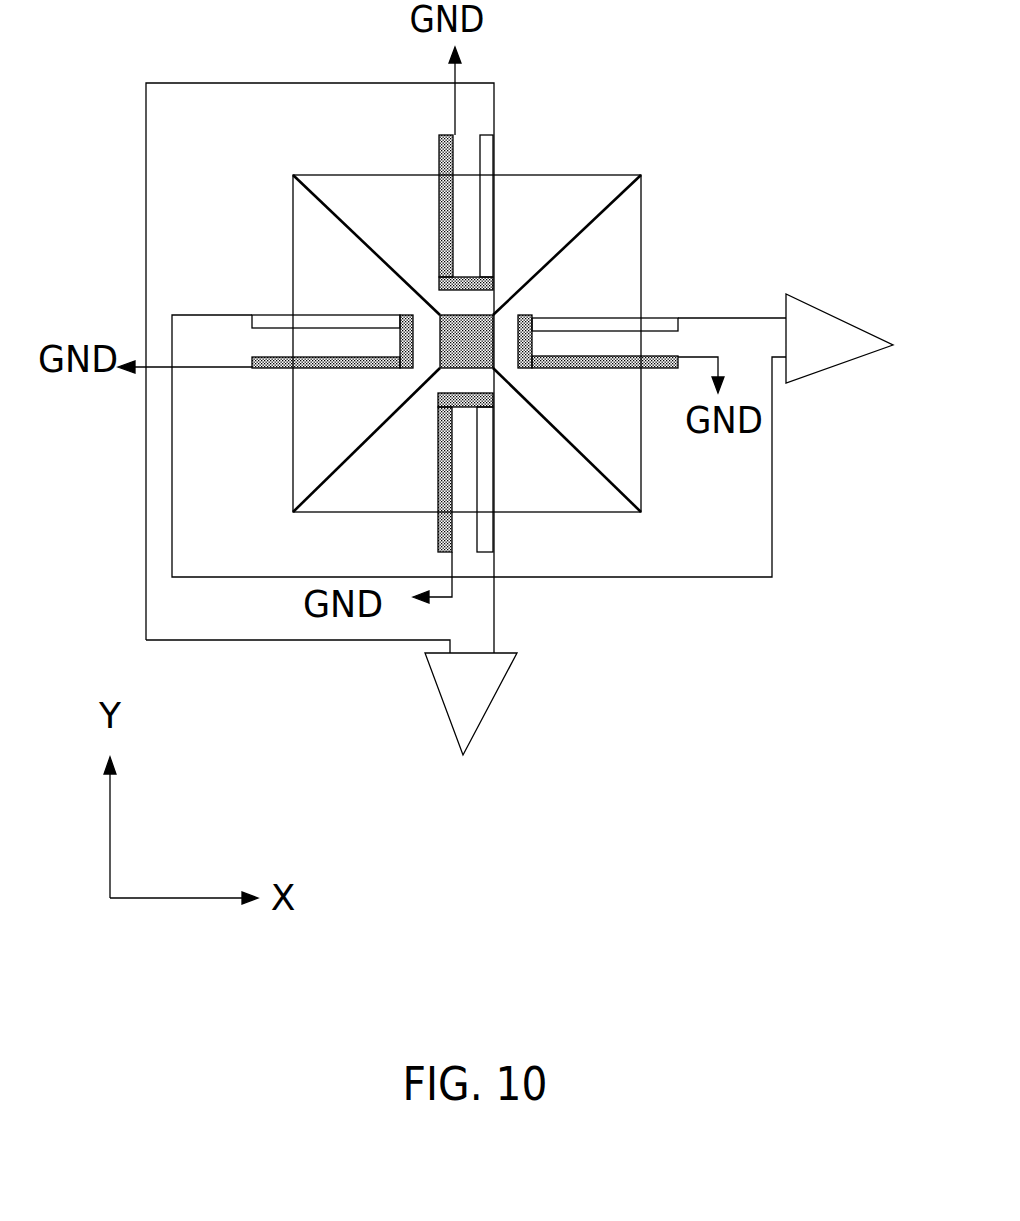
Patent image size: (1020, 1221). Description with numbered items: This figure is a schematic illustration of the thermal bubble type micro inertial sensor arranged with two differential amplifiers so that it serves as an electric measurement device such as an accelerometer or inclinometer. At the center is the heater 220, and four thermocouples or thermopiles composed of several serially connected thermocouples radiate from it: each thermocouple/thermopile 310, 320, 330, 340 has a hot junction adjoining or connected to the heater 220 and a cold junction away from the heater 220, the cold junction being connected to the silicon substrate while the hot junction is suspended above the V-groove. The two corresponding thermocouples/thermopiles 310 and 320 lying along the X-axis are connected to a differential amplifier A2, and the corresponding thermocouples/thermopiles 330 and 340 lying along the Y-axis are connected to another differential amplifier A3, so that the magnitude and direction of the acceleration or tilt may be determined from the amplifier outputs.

The heater 220 is at (466, 355).
The thermocouple/thermopile 310 is at (600, 329).
The thermocouple/thermopile 320 is at (349, 343).
The thermocouple/thermopile 330 is at (476, 193).
The thermocouple/thermopile 340 is at (476, 463).
The differential amplifier A2 is at (800, 296).
The differential amplifier A3 is at (502, 685).